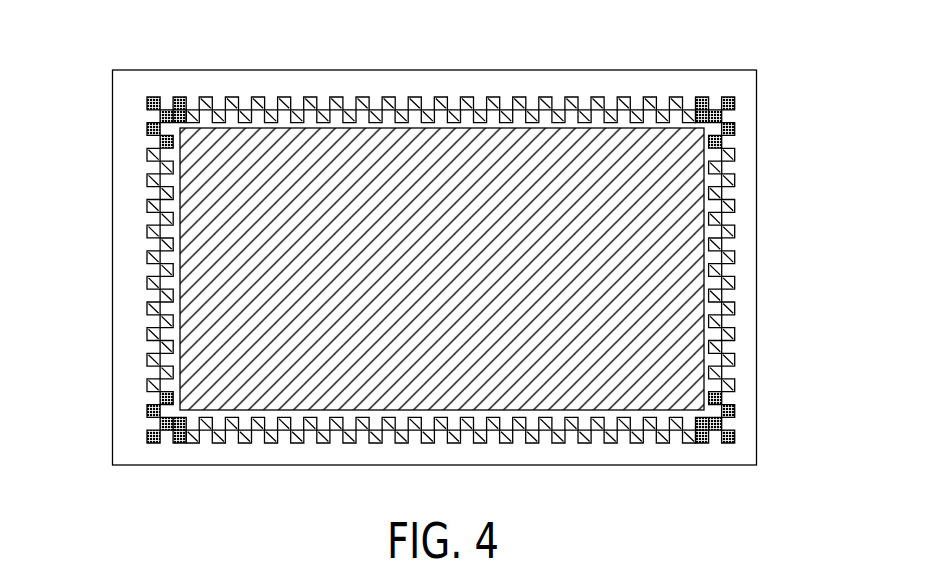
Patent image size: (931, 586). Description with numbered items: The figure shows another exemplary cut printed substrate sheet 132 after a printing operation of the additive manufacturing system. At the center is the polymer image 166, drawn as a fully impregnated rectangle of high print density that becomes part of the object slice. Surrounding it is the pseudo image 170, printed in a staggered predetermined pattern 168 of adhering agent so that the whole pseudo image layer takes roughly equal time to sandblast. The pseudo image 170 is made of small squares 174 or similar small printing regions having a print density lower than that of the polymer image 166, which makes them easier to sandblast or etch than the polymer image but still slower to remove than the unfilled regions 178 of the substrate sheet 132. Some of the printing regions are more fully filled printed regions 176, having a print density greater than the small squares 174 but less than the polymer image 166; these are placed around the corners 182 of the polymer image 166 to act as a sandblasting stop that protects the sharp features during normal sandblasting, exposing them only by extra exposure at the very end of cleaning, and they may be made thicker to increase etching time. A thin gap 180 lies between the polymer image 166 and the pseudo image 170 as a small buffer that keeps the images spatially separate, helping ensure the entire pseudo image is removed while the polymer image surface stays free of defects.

The cut printed substrate sheet 132 is at (284, 70).
The polymer image 166 is at (320, 128).
The predetermined pattern 168 is at (725, 222).
The pseudo image 170 is at (470, 100).
The small squares 174 is at (282, 444).
The more fully filled printed regions 176 is at (150, 130).
The unfilled regions 178 is at (598, 95).
The thin gap 180 is at (600, 420).
The corners 182 is at (197, 140).